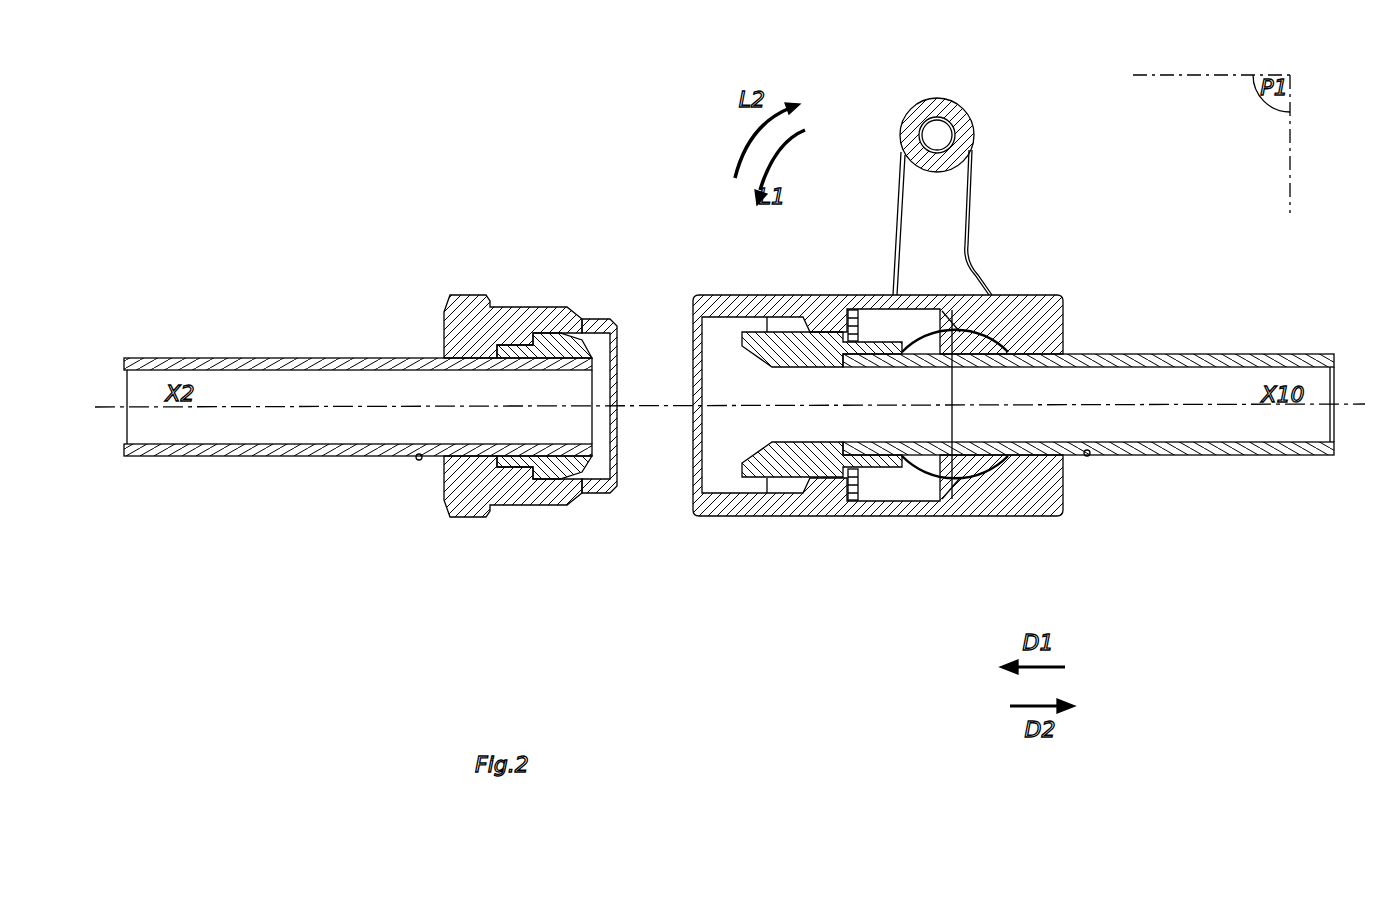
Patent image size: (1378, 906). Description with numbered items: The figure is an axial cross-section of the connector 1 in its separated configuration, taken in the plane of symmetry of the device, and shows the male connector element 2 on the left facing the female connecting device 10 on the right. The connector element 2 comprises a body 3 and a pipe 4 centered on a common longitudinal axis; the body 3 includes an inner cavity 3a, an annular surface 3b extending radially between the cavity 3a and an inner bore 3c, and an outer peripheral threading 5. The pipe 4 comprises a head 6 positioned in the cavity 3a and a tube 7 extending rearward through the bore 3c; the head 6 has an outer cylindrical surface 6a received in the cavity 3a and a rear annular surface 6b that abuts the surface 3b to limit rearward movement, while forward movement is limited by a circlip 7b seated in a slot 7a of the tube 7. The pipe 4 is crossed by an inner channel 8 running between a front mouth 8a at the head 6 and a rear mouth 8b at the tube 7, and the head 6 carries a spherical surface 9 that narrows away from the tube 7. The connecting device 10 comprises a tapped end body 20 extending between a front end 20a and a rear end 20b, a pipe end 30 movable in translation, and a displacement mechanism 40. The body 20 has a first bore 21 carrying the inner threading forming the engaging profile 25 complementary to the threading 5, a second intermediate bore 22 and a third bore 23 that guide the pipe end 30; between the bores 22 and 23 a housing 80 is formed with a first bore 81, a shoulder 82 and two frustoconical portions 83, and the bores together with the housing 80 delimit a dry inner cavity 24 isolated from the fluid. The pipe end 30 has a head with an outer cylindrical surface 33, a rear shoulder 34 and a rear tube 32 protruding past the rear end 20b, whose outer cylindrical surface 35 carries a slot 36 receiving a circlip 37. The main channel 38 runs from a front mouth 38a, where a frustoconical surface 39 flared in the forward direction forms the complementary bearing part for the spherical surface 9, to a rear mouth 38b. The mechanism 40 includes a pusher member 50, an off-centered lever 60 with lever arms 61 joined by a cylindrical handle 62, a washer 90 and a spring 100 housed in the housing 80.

The connector 1 is at (607, 113).
The connector element 2 is at (537, 193).
The connecting device 10 is at (619, 179).
The body 3 is at (466, 294).
The inner cavity 3a is at (543, 342).
The annular surface 3b is at (552, 306).
The inner bore 3c is at (474, 364).
The pipe 4 is at (316, 358).
The outer peripheral threading 5 is at (555, 306).
The head 6 is at (514, 458).
The outer cylindrical surface 6a is at (546, 490).
The rear annular surface 6b is at (485, 471).
The tube 7 is at (322, 456).
The slot 7a is at (420, 356).
The circlip 7b is at (417, 459).
The inner channel 8 is at (330, 388).
The front mouth 8a is at (596, 427).
The rear mouth 8b is at (123, 448).
The spherical surface 9 is at (584, 344).
The end body 20 is at (748, 516).
The front end 20a is at (702, 548).
The rear end 20b is at (1084, 556).
The first bore 21 is at (792, 478).
The second intermediate bore 22 is at (822, 468).
The third bore 23 is at (1038, 453).
The inner cavity 24 is at (789, 297).
The engaging profile 25 is at (724, 350).
The pipe end 30 is at (1243, 456).
The rear tube 32 is at (1156, 354).
The outer cylindrical surface 33 is at (826, 318).
The rear shoulder 34 is at (857, 463).
The outer cylindrical surface 35 is at (1139, 458).
The slot 36 is at (1087, 457).
The circlip 37 is at (1086, 353).
The main channel 38 is at (1008, 388).
The front mouth 38a is at (741, 434).
The rear mouth 38b is at (1337, 425).
The frustoconical surface 39 is at (759, 367).
The displacement mechanism 40 is at (1043, 130).
The pusher member 50 is at (1027, 297).
The off-centered lever 60 is at (879, 98).
The lever arm 61 is at (911, 194).
The handle 62 is at (929, 108).
The housing 80 is at (912, 516).
The first bore 81 is at (910, 322).
The shoulder 82 is at (861, 323).
The frustoconical portion 83 is at (944, 332).
The washer 90 is at (892, 513).
The spring 100 is at (866, 500).